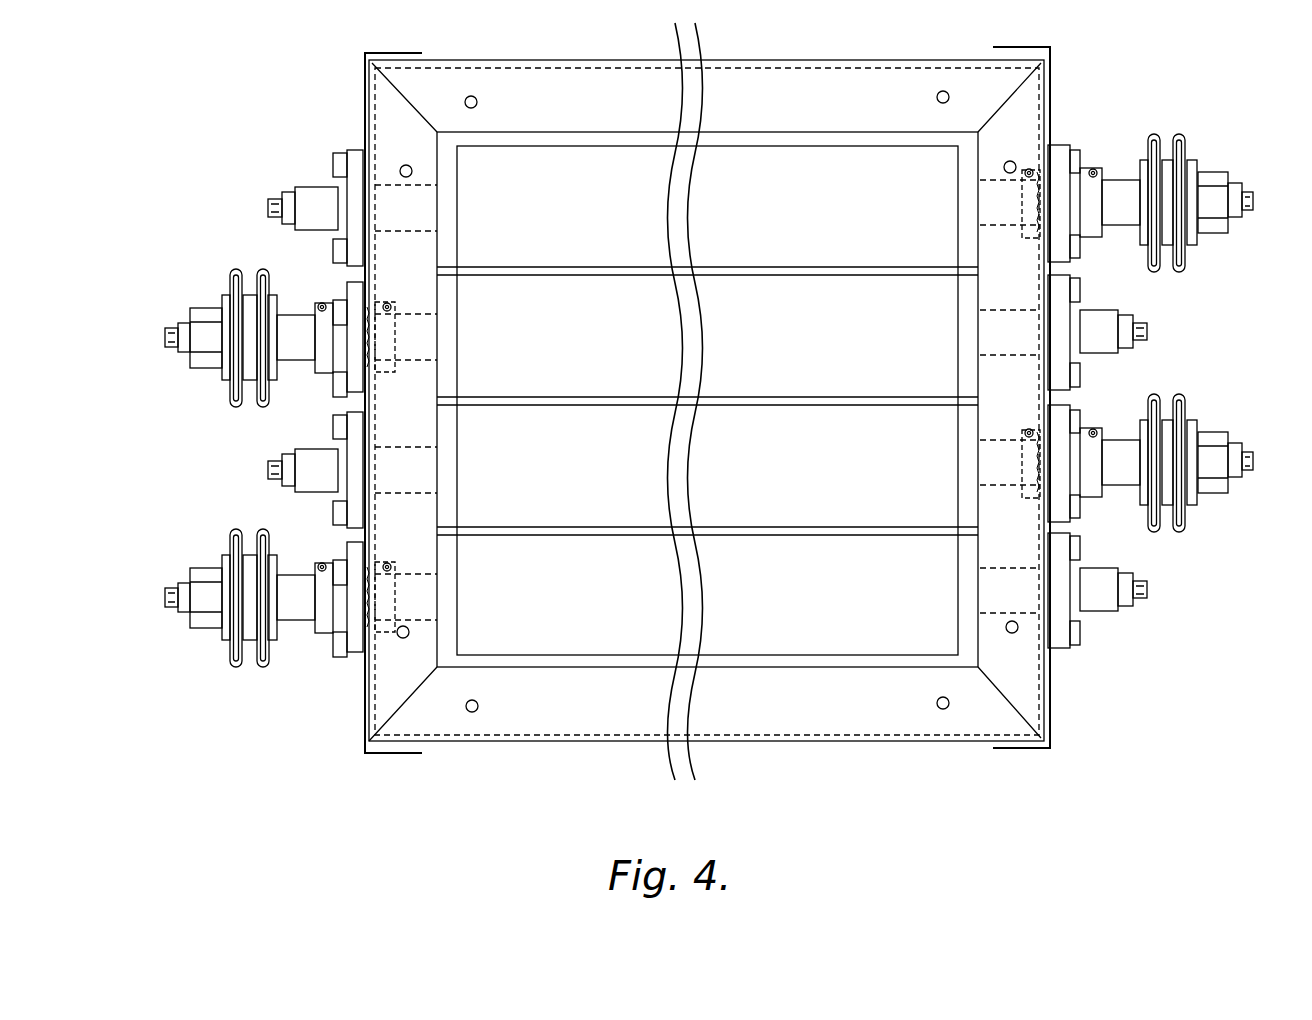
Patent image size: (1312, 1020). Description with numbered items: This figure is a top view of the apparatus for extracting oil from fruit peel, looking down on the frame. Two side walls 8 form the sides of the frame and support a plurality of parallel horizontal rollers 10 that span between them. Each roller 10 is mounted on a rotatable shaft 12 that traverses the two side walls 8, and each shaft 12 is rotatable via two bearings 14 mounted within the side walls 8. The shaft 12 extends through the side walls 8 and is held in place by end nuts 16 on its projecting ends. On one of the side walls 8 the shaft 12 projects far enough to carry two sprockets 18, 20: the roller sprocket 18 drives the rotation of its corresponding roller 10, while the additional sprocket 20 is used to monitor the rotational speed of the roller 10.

The side walls 8 is at (368, 753).
The rollers 10 is at (540, 268).
The shaft 12 is at (297, 350).
The bearings 14 is at (341, 320).
The end nuts 16 is at (287, 192).
The roller sprocket 18 is at (263, 273).
The sprocket 20 is at (237, 272).